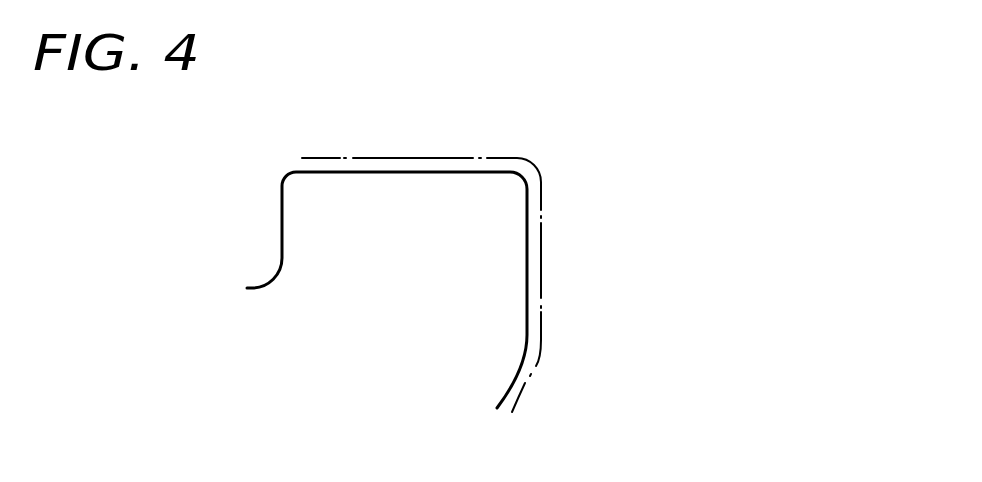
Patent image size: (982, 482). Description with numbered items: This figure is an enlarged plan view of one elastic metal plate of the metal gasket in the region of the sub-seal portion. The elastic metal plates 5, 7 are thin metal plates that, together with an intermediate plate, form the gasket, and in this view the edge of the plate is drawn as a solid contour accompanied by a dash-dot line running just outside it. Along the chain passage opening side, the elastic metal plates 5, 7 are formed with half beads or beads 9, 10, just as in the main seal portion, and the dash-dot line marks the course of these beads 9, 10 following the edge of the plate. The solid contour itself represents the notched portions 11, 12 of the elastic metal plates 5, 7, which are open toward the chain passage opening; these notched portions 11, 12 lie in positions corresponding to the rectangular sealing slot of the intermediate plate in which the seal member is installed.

The elastic metal plate 5 is at (447, 146).
The elastic metal plate 7 is at (526, 158).
The half bead or bead 9 is at (577, 317).
The half bead or bead 10 is at (542, 277).
The notched portion 11 is at (387, 290).
The notched portion 12 is at (347, 173).